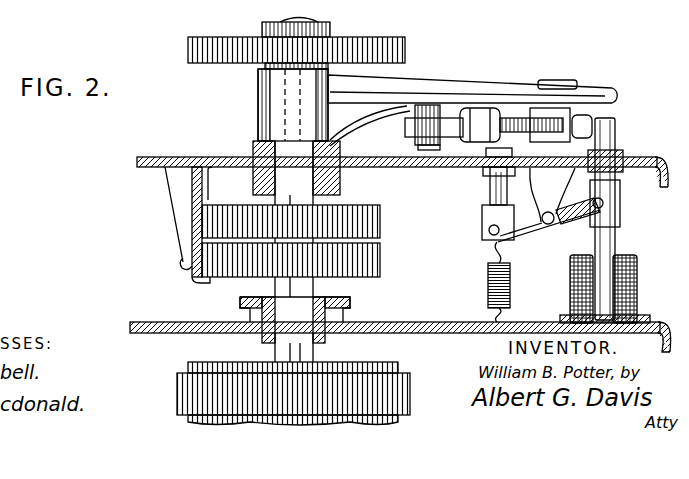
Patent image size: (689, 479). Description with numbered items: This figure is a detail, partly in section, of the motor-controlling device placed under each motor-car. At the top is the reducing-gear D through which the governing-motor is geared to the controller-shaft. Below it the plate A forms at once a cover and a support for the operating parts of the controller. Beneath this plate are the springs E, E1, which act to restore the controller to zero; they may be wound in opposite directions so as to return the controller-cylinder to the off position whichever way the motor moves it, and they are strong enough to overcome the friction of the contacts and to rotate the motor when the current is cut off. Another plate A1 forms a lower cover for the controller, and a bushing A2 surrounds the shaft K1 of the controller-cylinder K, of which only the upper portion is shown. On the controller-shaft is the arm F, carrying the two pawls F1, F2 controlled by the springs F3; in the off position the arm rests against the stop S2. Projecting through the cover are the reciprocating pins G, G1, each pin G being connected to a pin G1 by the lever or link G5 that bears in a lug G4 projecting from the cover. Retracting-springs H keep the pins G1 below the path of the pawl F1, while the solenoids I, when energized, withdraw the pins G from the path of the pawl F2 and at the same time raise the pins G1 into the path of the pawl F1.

The plate A is at (402, 202).
The plate A1 is at (167, 322).
The bushing A2 is at (352, 306).
The reducing-gear D is at (407, 46).
The spring E is at (382, 212).
The spring E1 is at (382, 263).
The arm F is at (430, 88).
The pawl F1 is at (492, 108).
The pawl F2 is at (595, 124).
The pawl spring F3 is at (612, 62).
The stop S2 is at (560, 80).
The reciprocating pin G is at (618, 136).
The reciprocating pin G1 is at (490, 188).
The lug G4 is at (544, 226).
The lever or link G5 is at (586, 218).
The retracting-spring H is at (488, 286).
The solenoid I is at (570, 290).
The controller-cylinder K is at (400, 390).
The shaft K1 is at (290, 348).